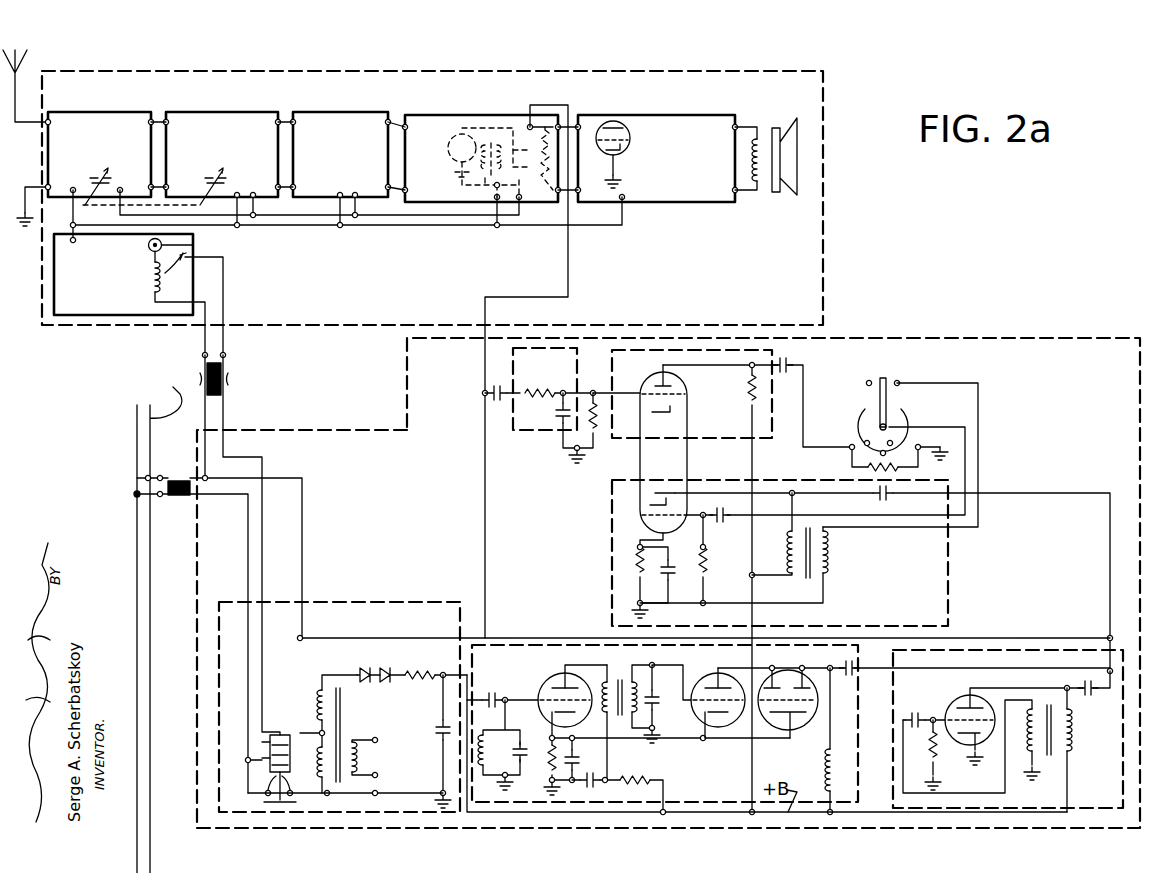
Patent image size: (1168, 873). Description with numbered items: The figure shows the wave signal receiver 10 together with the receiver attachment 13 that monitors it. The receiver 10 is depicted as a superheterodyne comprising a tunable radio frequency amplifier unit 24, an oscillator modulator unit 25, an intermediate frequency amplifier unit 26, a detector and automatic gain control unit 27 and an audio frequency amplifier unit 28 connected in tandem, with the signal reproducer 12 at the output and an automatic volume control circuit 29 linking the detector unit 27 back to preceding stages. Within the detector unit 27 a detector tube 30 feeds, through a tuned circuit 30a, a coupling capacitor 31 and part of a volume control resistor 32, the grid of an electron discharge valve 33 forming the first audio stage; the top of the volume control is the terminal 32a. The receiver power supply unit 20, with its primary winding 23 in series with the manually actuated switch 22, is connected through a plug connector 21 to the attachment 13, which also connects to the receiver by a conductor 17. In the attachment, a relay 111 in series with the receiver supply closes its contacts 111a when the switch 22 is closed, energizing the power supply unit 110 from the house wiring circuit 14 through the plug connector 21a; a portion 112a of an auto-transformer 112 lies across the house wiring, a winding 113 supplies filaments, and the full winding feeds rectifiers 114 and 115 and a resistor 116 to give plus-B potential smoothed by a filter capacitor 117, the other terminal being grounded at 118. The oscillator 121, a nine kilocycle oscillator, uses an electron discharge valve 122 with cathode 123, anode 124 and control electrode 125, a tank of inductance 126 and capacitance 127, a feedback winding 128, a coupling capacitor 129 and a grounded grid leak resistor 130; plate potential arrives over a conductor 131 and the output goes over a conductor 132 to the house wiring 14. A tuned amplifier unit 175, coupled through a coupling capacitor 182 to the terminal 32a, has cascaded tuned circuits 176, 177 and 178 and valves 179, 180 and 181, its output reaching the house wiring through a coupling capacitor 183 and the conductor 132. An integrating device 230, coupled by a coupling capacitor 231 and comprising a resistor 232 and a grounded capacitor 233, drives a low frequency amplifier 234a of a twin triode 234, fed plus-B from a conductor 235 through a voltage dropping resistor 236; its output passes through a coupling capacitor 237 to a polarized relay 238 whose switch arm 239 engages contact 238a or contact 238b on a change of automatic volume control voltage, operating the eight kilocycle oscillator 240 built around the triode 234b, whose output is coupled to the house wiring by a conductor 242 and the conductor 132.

The wave signal receiver 10 is at (795, 243).
The signal reproducer 12 is at (788, 126).
The receiver attachment 13 is at (975, 335).
The house wiring circuit 14 is at (159, 624).
The conductor 17 is at (574, 280).
The power supply unit 20 is at (54, 273).
The plug connector 21 is at (205, 374).
The plug connector 21a is at (192, 478).
The manually actuated switch 22 is at (193, 245).
The primary winding 23 is at (167, 282).
The tunable radio frequency amplifier unit 24 is at (103, 111).
The oscillator modulator unit 25 is at (207, 111).
The intermediate frequency amplifier unit 26 is at (338, 111).
The detector and automatic gain control unit 27 is at (444, 113).
The audio frequency amplifier unit 28 is at (672, 116).
The automatic volume control circuit 29 is at (396, 227).
The detector tube 30 is at (462, 133).
The tuned circuit 30a is at (494, 187).
The coupling capacitor 31 is at (507, 127).
The volume control resistor 32 is at (548, 128).
The top of the volume control resistor 32a is at (530, 124).
The electron discharge valve 33 is at (609, 122).
The power supply unit 110 is at (348, 608).
The relay 111 is at (280, 727).
The contacts 111a is at (268, 791).
The auto-transformer 112 is at (318, 698).
The portion of the auto-transformer 112a is at (332, 788).
The winding 113 is at (360, 742).
The rectifier 114 is at (360, 672).
The rectifier 115 is at (388, 672).
The resistor 116 is at (426, 672).
The filter capacitor 117 is at (441, 725).
The ground 118 is at (440, 796).
The oscillator 121 is at (1085, 632).
The electron discharge valve 122 is at (955, 695).
The cathode 123 is at (973, 753).
The anode 124 is at (980, 697).
The control electrode 125 is at (949, 716).
The inductance 126 is at (1072, 737).
The capacitance 127 is at (1086, 694).
The winding 128 is at (1030, 766).
The coupling capacitor 129 is at (930, 745).
The grid leak resistor 130 is at (937, 775).
The conductor 131 is at (703, 812).
The conductor 132 is at (986, 641).
The tuned amplifier unit 175 is at (571, 645).
The tuned circuit 176 is at (503, 745).
The tuned circuit 177 is at (630, 680).
The tuned circuit 178 is at (844, 741).
The electron discharge valve 179 is at (540, 688).
The electron discharge valve 180 is at (706, 682).
The electron discharge valve 181 is at (795, 731).
The coupling capacitor 182 is at (510, 686).
The coupling capacitor 183 is at (856, 672).
The integrating device 230 is at (504, 353).
The coupling capacitor 231 is at (478, 403).
The resistor 232 is at (558, 388).
The capacitor 233 is at (560, 414).
The twin triode 234 is at (687, 430).
The low frequency amplifier 234a is at (650, 388).
The triode 234b is at (697, 496).
The conductor 235 is at (770, 580).
The voltage dropping resistor 236 is at (748, 388).
The coupling capacitor 237 is at (795, 370).
The polarized relay 238 is at (868, 425).
The contact 238a is at (867, 380).
The contact 238b is at (899, 385).
The switch arm 239 is at (878, 400).
The oscillator 240 is at (956, 552).
The conductor 242 is at (1076, 493).